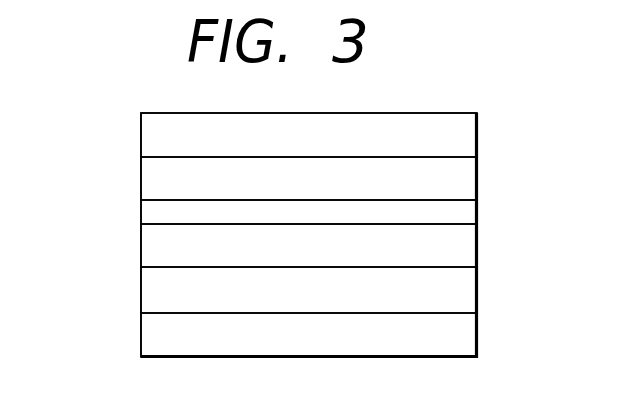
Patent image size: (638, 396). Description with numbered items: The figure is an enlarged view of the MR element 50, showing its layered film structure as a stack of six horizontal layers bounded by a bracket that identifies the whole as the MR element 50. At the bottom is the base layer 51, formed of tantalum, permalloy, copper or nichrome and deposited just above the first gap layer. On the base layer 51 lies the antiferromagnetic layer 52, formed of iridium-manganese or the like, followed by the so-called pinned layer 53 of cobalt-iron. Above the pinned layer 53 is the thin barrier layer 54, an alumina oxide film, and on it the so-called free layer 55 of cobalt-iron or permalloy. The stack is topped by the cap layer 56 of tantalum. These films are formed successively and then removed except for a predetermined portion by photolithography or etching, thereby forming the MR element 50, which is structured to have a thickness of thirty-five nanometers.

The MR element 50 is at (494, 113).
The base layer 51 is at (152, 331).
The antiferromagnetic layer 52 is at (152, 287).
The pinned layer 53 is at (152, 246).
The barrier layer 54 is at (152, 209).
The free layer 55 is at (152, 177).
The cap layer 56 is at (152, 132).